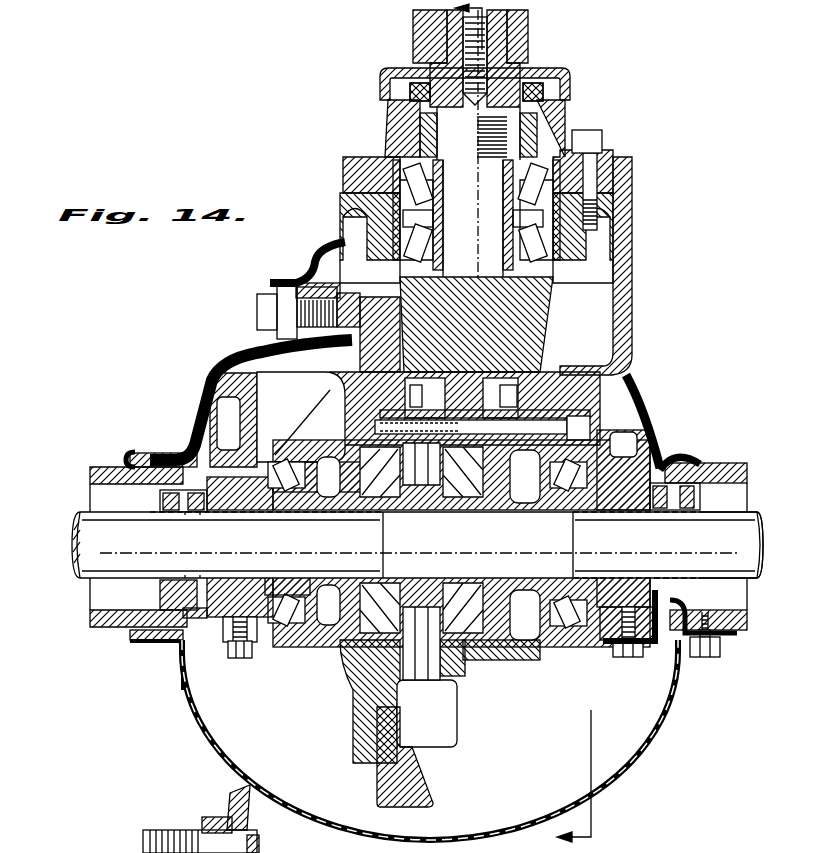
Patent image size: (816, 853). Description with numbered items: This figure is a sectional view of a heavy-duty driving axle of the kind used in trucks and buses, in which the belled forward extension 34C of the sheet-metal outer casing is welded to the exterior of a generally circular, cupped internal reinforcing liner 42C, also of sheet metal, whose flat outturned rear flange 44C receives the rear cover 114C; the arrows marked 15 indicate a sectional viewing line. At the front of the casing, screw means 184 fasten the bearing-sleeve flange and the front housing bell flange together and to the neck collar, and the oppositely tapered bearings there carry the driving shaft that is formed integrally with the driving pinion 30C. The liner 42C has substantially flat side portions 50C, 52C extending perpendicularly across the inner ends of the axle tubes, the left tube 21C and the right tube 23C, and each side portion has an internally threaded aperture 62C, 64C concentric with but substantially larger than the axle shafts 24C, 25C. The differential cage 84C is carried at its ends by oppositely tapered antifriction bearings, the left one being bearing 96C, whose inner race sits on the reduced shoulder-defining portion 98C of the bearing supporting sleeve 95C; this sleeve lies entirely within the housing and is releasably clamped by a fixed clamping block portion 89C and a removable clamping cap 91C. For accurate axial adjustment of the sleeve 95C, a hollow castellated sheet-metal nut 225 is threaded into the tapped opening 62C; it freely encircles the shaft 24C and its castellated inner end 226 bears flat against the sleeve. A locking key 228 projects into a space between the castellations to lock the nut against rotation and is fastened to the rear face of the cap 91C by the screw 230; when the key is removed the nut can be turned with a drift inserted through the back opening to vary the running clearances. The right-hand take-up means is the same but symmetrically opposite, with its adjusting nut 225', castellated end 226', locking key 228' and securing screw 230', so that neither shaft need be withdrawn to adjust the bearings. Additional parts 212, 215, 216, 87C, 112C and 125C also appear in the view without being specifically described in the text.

The section line 15 is at (536, 425).
The screw means 184 is at (595, 138).
The driving pinion 30C is at (536, 330).
The belled forward extension portion 34C is at (633, 312).
The internal reinforcing liner 42C is at (643, 420).
The rolled lip 215 is at (128, 455).
The flange 212 is at (158, 453).
The axle tube 21C is at (95, 467).
The internally threaded aperture 62C is at (170, 490).
The castellated portion 226 is at (260, 539).
The axle shaft 24C is at (150, 551).
The hollow castellated sheet metal screw 225 is at (182, 572).
The bearing supporting sleeve 95C is at (245, 590).
The reduced shoulder-defining portion 98C is at (295, 580).
The flat side portion 50C is at (183, 612).
The gasket 112C is at (135, 632).
The outturned rear flange 44C is at (150, 642).
The locking key 228 is at (228, 648).
The screw 230 is at (233, 670).
The removable clamping cap portion 91C is at (290, 622).
The antifriction bearing 96C is at (278, 618).
The cover 114C is at (222, 752).
The pinion support 125C is at (432, 762).
The differential cage 84C is at (497, 650).
The bolt 87C is at (565, 648).
The screw 230' is at (606, 672).
The locking key 228' is at (674, 655).
The flange 216 is at (728, 462).
The axle tube 23C is at (745, 462).
The internally threaded aperture 64C is at (688, 484).
The castellated portion 226' is at (636, 544).
The flat side portion 52C is at (657, 585).
The adjusting nut 225' is at (684, 583).
The axle shaft 25C is at (732, 551).
The fixed clamping block portion 89C is at (255, 414).